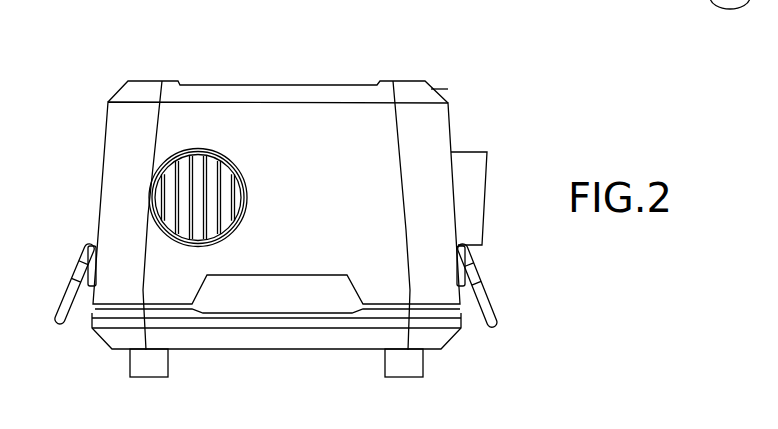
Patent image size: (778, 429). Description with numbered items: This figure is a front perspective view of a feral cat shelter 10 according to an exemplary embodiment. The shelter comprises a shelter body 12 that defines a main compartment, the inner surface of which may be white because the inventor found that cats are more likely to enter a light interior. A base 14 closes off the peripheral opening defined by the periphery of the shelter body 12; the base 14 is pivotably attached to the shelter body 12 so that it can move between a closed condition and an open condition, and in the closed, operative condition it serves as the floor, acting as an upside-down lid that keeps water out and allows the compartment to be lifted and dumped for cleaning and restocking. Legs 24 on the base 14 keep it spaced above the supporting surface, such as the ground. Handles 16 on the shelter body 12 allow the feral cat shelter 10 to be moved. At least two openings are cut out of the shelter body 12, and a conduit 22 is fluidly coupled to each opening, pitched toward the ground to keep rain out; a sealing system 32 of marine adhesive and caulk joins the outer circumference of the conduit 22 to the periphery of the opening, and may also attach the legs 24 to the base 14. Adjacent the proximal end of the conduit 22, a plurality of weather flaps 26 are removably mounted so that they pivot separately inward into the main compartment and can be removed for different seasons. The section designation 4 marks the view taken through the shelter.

The feral cat shelter 10 is at (130, 40).
The shelter body 12 is at (278, 84).
The base 14 is at (275, 352).
The handles 16 is at (56, 333).
The conduit 22 is at (486, 175).
The legs 24 is at (147, 378).
The weather flaps 26 is at (208, 174).
The sealing system 32 is at (173, 153).
The section line 4- 4 is at (73, 200).